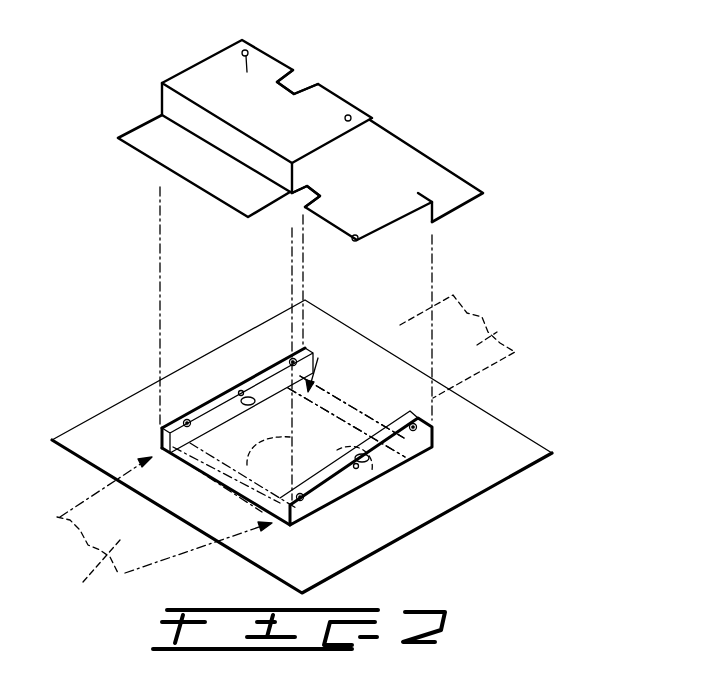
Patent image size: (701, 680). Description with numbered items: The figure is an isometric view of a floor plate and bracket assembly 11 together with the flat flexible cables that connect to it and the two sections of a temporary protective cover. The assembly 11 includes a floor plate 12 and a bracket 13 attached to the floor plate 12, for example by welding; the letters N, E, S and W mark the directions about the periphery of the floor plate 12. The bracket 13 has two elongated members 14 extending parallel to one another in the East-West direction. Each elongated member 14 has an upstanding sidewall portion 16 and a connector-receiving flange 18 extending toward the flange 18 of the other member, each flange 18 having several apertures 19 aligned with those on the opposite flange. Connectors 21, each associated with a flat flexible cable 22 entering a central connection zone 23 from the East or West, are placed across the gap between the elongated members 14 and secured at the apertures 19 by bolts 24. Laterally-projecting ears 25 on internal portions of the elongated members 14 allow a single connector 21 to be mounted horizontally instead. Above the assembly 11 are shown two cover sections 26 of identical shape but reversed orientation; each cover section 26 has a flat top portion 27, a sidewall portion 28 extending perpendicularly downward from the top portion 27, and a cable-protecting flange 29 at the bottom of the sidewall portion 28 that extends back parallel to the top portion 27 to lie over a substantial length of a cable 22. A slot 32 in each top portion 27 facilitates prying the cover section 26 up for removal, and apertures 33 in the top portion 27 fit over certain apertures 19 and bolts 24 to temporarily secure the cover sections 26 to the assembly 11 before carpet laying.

The floor plate and bracket assembly 11 is at (307, 448).
The floor plate 12 is at (512, 445).
The bracket 13 is at (225, 490).
The elongated member 14 is at (169, 511).
The sidewall portion 16 is at (288, 427).
The connector-receiving flange 18 is at (217, 407).
The aperture 19 is at (247, 396).
The connector 21 is at (327, 414).
The flat flexible cable 22 is at (492, 330).
The central connection zone 23 is at (322, 360).
The bolt 24 is at (291, 358).
The laterally-projecting ear 25 is at (257, 403).
The cover section 26 is at (278, 260).
The top portion 27 is at (325, 102).
The sidewall portion 28 is at (173, 100).
The cable-protecting flange 29 is at (153, 143).
The slot 32 is at (296, 82).
The aperture 33 is at (346, 119).